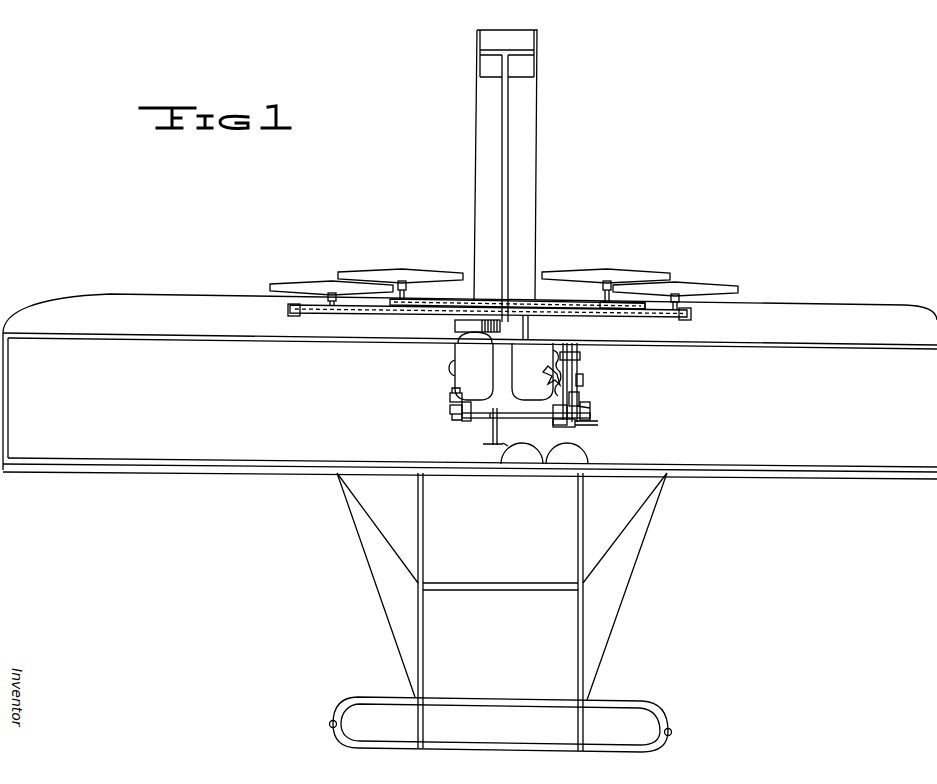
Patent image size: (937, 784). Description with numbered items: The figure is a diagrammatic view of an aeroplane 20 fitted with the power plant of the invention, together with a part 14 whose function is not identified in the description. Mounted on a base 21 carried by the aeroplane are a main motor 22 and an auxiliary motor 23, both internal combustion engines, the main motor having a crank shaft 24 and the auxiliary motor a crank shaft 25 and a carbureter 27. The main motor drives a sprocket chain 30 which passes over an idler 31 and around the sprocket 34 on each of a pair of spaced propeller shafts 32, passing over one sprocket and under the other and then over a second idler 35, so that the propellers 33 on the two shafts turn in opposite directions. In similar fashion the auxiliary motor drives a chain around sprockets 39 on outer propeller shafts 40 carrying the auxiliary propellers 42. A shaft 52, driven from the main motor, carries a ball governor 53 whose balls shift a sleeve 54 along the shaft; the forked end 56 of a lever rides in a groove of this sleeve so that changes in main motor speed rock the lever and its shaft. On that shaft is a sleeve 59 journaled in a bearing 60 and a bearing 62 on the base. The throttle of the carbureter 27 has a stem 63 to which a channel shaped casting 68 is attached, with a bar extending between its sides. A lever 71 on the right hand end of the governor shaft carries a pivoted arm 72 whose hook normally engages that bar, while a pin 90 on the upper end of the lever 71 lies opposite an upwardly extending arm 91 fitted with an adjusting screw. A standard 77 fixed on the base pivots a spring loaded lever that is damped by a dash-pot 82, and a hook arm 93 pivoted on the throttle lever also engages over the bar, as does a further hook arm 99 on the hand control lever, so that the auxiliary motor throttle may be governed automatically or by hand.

The knob 14 is at (582, 420).
The aeroplane 20 is at (305, 452).
The base 21 is at (489, 443).
The main motor 22 is at (472, 358).
The auxiliary motor 23 is at (522, 368).
The crank shaft 24 is at (470, 305).
The crank shaft 25 is at (529, 328).
The carbureter 27 is at (520, 352).
The sprocket chain 30 is at (520, 300).
The idler 31 is at (386, 313).
The propeller shafts 32 is at (403, 270).
The propeller 33 is at (348, 271).
The sprocket 34 is at (592, 305).
The idler 35 is at (640, 310).
The sprockets 39 is at (332, 316).
The propeller shafts 40 is at (331, 283).
The auxiliary propellers 42 is at (278, 285).
The shaft 52 is at (450, 398).
The governor 53 is at (452, 393).
The sleeve 54 is at (450, 410).
The forked end 56 is at (455, 416).
The sleeve 59 is at (510, 419).
The bearing 60 is at (468, 421).
The bearing 62 is at (558, 422).
The stem 63 is at (550, 380).
The casting 68 is at (583, 378).
The lever 71 is at (575, 424).
The arm 72 is at (580, 396).
The standard 77 is at (575, 352).
The dash-pot 82 is at (575, 356).
The pin 90 is at (598, 423).
The arm 91 is at (491, 450).
The hook arm 93 is at (590, 407).
The hook arm 99 is at (545, 418).